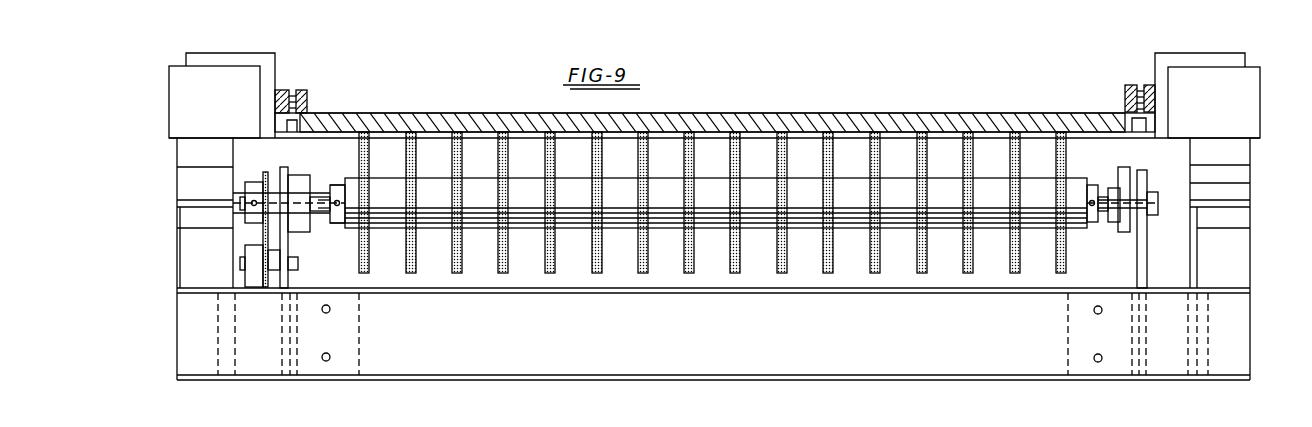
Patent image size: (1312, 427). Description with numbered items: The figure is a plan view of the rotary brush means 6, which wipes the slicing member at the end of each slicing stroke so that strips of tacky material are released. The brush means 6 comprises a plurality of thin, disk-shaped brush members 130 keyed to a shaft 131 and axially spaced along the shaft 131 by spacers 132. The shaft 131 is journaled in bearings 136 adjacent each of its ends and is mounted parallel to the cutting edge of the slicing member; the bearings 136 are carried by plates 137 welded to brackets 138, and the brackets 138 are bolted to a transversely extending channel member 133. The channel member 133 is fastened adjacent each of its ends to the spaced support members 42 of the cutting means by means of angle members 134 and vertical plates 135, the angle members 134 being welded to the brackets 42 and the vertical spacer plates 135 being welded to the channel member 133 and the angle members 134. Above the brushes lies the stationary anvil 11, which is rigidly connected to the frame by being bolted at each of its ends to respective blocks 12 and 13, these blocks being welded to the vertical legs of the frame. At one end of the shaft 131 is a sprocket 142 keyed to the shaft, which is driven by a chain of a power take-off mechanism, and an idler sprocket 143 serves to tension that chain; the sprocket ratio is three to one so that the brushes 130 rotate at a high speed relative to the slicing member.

The rotary brush means 6 is at (158, 290).
The anvil 11 is at (462, 123).
The block 12 is at (308, 93).
The block 13 is at (1123, 92).
The support member 42 is at (185, 180).
The brush member 130 is at (364, 160).
The shaft 131 is at (322, 222).
The spacer 132 is at (430, 224).
The channel member 133 is at (482, 376).
The angle member 134 is at (185, 253).
The vertical plate 135 is at (218, 338).
The bearing 136 is at (305, 182).
The plate 137 is at (290, 280).
The bracket 138 is at (359, 338).
The sprocket 142 is at (250, 183).
The idler sprocket 143 is at (247, 270).